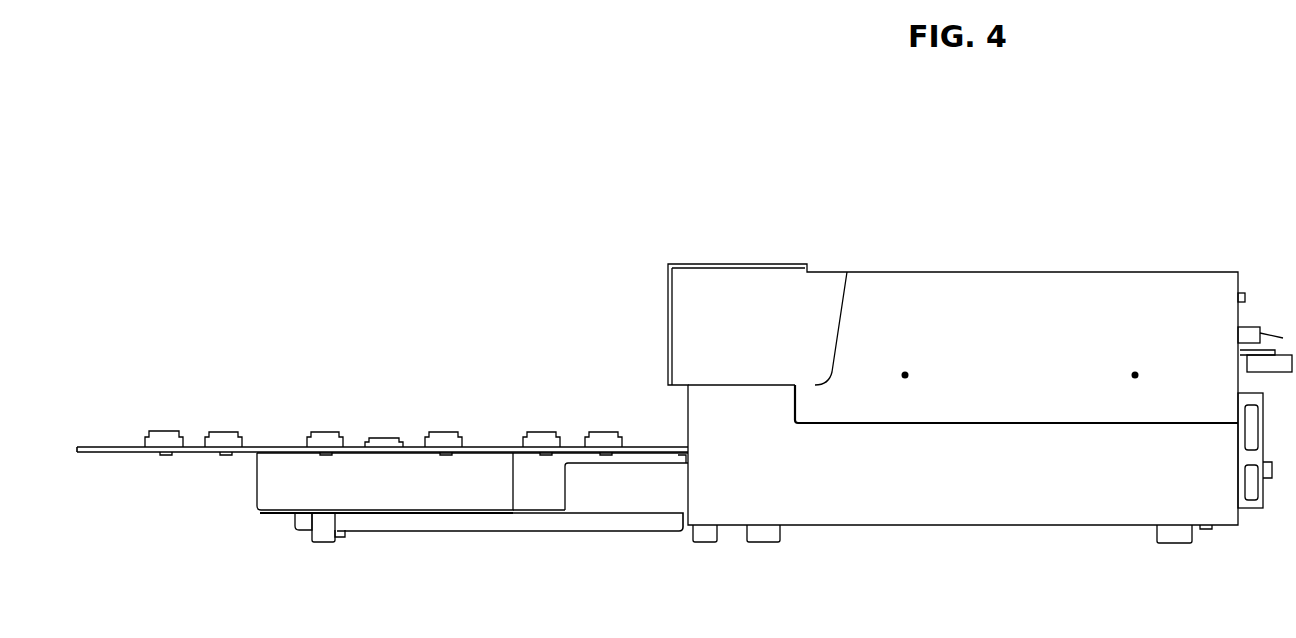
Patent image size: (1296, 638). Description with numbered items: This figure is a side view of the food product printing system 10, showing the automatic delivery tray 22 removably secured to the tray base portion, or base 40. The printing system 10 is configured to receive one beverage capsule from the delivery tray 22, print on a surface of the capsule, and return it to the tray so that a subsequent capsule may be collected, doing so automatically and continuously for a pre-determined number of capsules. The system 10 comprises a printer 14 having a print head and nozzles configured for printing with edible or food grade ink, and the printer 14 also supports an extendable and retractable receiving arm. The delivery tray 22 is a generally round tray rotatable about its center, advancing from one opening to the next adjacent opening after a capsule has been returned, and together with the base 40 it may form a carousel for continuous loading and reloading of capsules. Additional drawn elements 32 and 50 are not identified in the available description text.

The printing system 10 is at (220, 190).
The printer 14 is at (645, 232).
The delivery tray 22 is at (272, 424).
The push button 32 is at (165, 432).
The base 40 is at (270, 487).
The base 50 is at (520, 523).